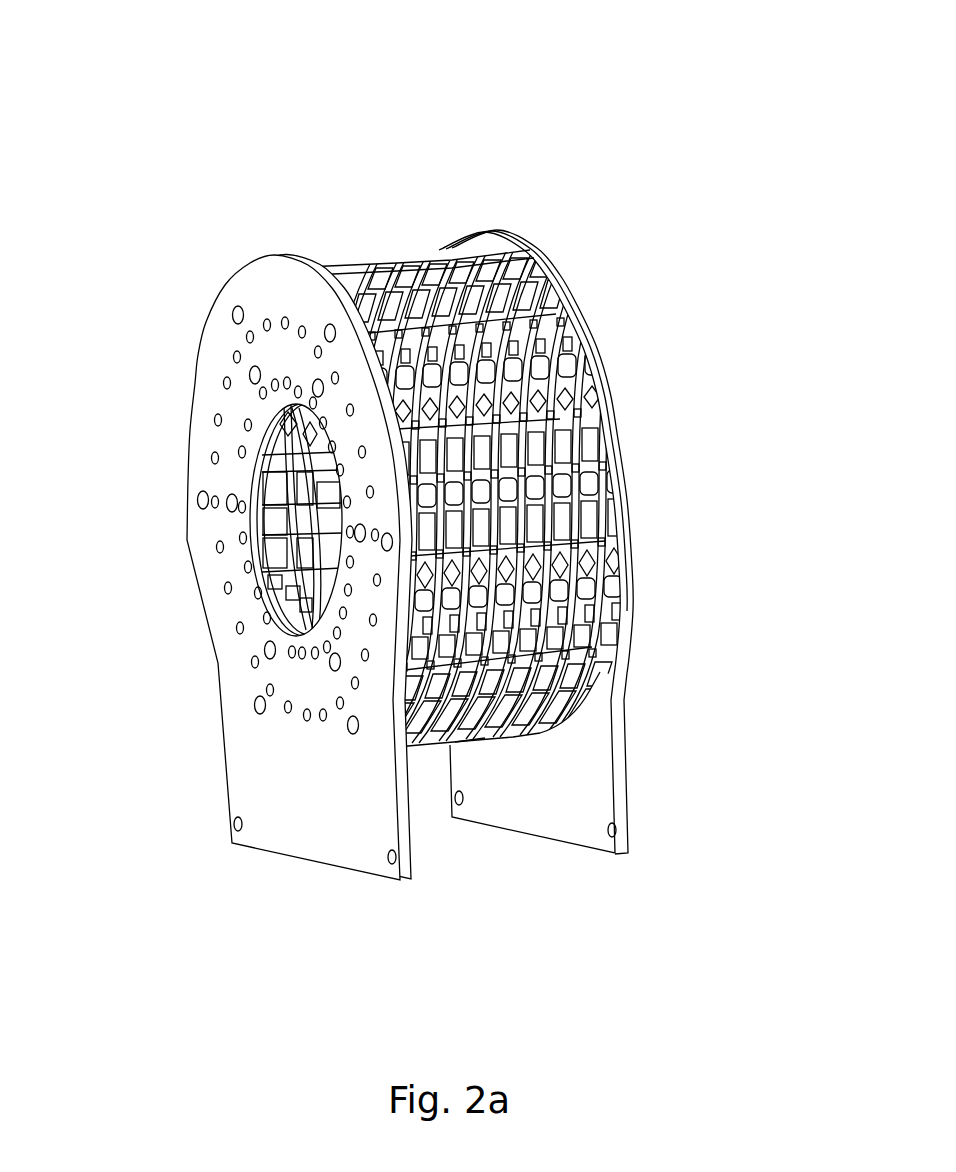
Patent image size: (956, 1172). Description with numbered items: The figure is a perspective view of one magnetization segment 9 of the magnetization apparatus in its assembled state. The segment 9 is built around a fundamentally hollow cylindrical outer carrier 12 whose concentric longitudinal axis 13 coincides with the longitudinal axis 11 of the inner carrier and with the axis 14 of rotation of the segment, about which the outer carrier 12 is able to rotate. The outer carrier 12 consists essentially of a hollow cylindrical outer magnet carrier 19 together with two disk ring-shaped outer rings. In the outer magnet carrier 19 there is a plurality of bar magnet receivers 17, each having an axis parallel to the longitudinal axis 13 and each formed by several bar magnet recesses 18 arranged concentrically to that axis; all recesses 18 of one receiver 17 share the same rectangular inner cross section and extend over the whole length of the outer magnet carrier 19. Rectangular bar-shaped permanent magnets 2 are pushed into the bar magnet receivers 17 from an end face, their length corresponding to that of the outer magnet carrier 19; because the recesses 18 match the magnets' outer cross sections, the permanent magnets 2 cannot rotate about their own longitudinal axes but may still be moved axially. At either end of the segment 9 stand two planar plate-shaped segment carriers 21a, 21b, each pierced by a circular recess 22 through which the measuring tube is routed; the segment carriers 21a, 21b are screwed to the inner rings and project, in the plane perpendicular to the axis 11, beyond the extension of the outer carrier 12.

The outer carrier 12 is at (318, 170).
The segment carrier 21a is at (248, 278).
The segment carrier 21b is at (492, 248).
The magnetization segment 9 is at (618, 295).
The longitudinal axis of the inner carrier 11 is at (627, 473).
The longitudinal axis of the outer carrier 13 is at (419, 262).
The axis of rotation of the segment 14 is at (498, 709).
The outer magnet carrier 19 is at (473, 730).
The bar magnet recesses 18 is at (283, 456).
The permanent magnets 2 is at (280, 509).
The circular recess 22 is at (268, 520).
The bar magnet receivers 17 is at (294, 607).